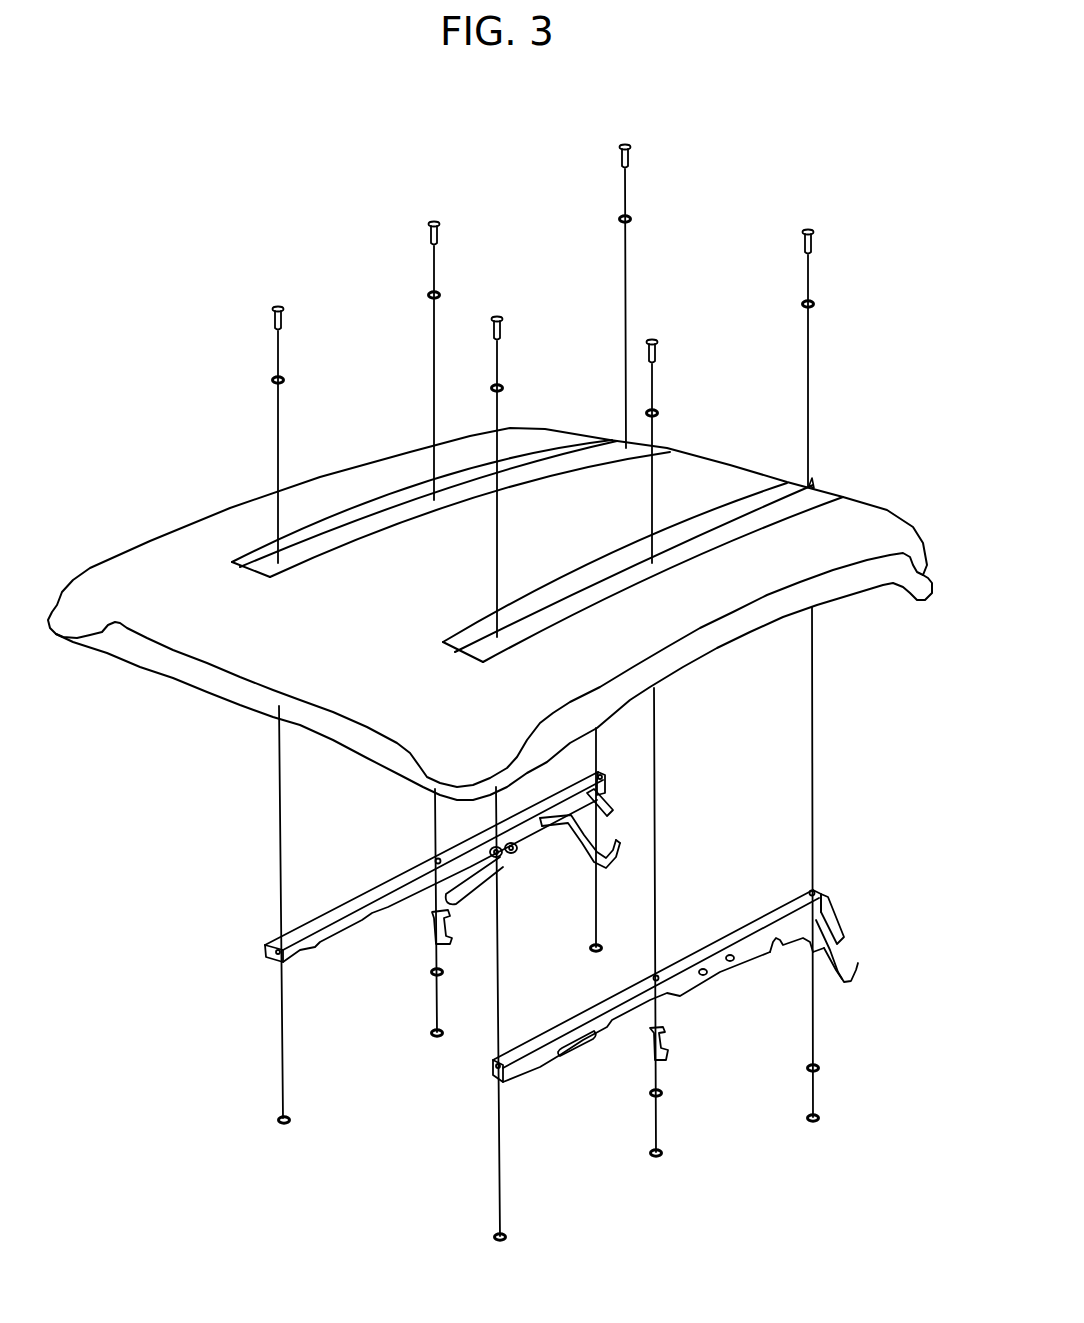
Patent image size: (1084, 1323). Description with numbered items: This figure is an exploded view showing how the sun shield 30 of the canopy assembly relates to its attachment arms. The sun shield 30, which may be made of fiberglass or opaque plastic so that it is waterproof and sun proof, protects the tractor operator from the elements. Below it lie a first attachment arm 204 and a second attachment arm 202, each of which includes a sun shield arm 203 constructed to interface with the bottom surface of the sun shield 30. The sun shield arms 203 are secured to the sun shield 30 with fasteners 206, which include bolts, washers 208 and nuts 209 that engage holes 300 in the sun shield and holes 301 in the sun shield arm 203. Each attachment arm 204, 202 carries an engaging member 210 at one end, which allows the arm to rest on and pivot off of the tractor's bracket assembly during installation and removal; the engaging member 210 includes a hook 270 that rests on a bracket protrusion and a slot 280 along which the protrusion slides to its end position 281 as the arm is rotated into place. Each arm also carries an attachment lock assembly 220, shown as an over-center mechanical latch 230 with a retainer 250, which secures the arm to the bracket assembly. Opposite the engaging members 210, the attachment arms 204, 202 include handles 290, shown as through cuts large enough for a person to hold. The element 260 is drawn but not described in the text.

The sun shield 30 is at (850, 510).
The holes in the sun shield 300 is at (818, 489).
The holes in the sun shield arm 301 is at (815, 888).
The second attachment arm 202 is at (650, 984).
The sun shield arm 203 is at (362, 903).
The first attachment arm 204 is at (399, 886).
The fasteners 206 is at (809, 231).
The washers 208 is at (814, 305).
The nuts 209 is at (818, 1119).
The engaging member 210 is at (611, 851).
The attachment lock assembly 220 is at (508, 858).
The over-center mechanical latch 230 is at (483, 898).
The retainer 250 is at (446, 938).
The tab 260 is at (776, 945).
The hook 270 is at (853, 972).
The slot 280 is at (830, 931).
The end position 281 is at (594, 792).
The handle 290 is at (563, 1068).